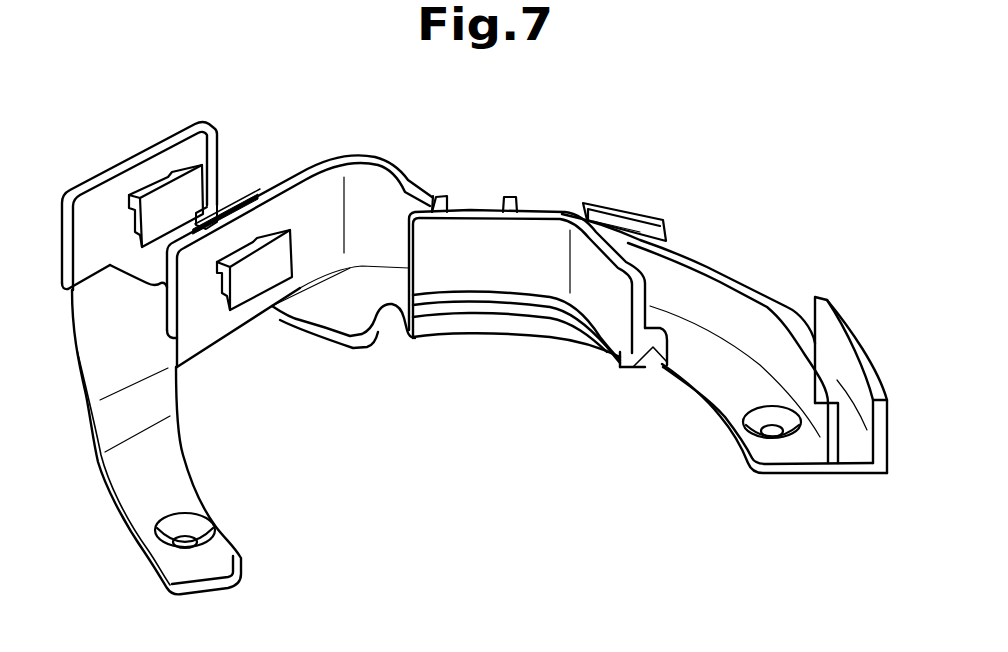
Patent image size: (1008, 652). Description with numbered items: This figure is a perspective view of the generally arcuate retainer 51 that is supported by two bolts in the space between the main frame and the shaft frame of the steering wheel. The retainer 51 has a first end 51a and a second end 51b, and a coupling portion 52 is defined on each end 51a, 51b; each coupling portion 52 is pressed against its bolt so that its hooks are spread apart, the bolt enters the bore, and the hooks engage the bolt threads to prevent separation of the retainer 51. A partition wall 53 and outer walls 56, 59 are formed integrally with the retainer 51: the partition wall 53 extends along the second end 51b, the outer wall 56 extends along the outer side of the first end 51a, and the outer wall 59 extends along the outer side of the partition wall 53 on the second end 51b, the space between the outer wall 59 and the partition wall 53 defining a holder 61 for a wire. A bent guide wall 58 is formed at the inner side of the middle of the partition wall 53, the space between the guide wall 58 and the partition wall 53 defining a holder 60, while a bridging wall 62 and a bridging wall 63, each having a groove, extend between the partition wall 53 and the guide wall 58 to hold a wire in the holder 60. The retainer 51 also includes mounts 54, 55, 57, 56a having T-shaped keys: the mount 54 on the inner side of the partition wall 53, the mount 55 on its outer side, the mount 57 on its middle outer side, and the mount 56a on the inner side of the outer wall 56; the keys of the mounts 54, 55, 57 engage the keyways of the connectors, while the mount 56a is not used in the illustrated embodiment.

The retainer 51 is at (687, 176).
The first end 51a is at (108, 518).
The second end 51b is at (712, 408).
The coupling portion 52 is at (206, 520).
The partition wall 53 is at (708, 257).
The mount 54 is at (244, 288).
The mount 55 is at (250, 187).
The outer wall 56 is at (138, 155).
The mount 56a is at (193, 181).
The mount 57 is at (627, 205).
The guide wall 58 is at (567, 207).
The outer wall 59 is at (885, 433).
The holder 60 is at (697, 302).
The holder 61 is at (868, 455).
The bridging wall 62 is at (442, 191).
The bridging wall 63 is at (510, 193).